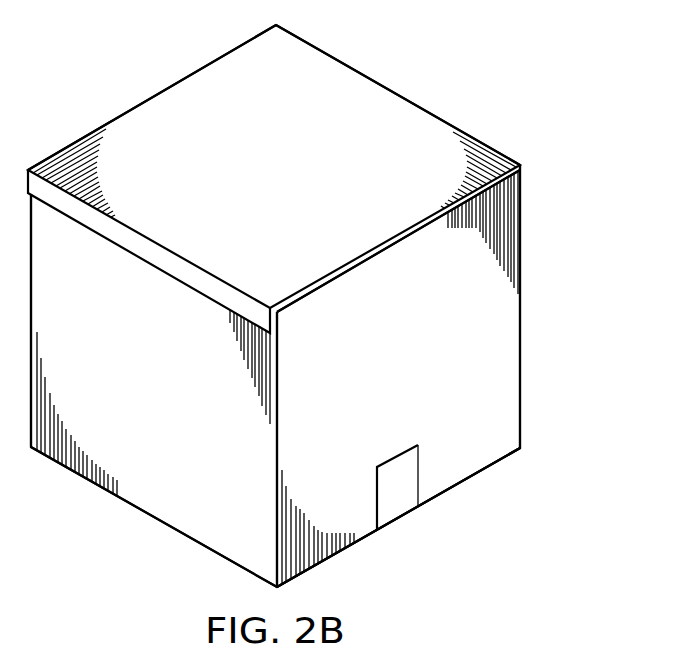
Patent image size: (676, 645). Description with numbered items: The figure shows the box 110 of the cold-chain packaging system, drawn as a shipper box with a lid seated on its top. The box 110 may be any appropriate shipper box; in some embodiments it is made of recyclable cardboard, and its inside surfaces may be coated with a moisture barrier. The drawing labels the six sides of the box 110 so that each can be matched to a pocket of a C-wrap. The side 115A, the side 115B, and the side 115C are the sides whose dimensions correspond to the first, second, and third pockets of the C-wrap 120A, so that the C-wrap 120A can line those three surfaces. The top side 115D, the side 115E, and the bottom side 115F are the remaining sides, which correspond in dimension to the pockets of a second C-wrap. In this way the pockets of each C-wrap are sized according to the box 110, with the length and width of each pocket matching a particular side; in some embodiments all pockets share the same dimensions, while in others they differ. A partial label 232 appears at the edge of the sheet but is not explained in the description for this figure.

The box 110 is at (328, 297).
The side 115A is at (112, 91).
The side 115B is at (205, 528).
The side 115C is at (513, 325).
The top side 115D is at (343, 78).
The side 115E is at (543, 201).
The bottom side 115F is at (76, 499).
The C-wrap 120A is at (672, 636).
The component 232 is at (530, 640).